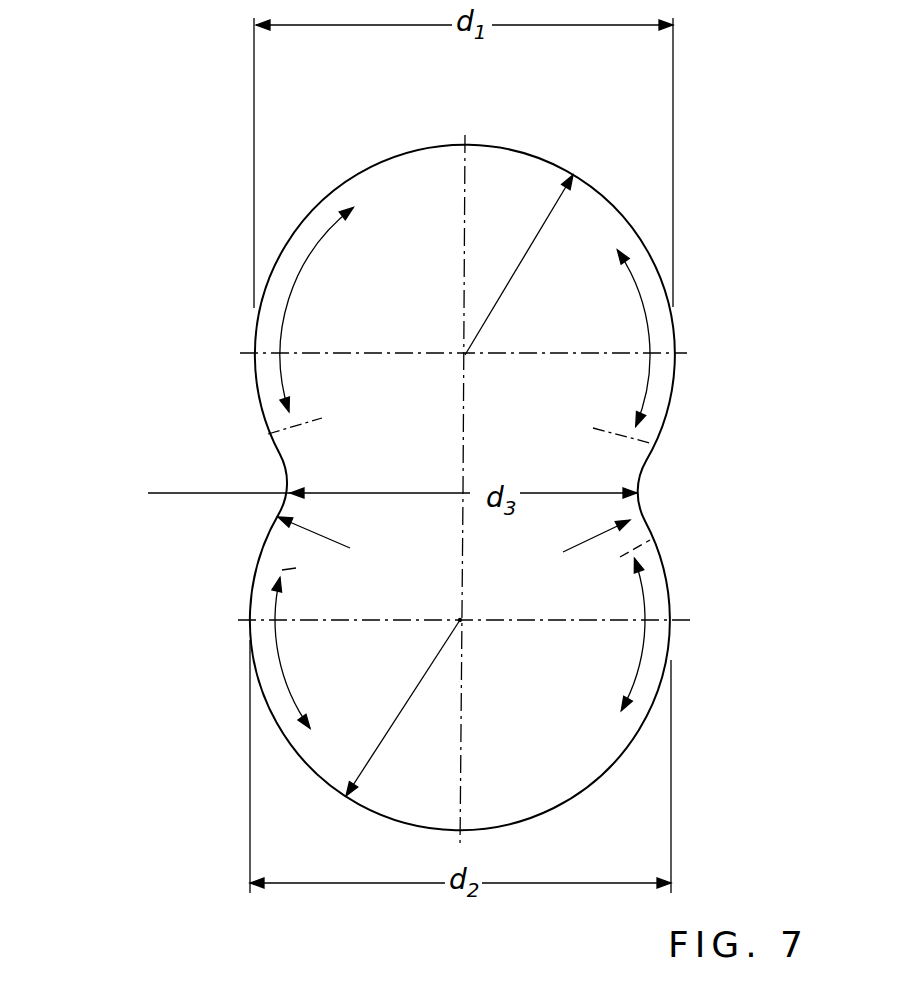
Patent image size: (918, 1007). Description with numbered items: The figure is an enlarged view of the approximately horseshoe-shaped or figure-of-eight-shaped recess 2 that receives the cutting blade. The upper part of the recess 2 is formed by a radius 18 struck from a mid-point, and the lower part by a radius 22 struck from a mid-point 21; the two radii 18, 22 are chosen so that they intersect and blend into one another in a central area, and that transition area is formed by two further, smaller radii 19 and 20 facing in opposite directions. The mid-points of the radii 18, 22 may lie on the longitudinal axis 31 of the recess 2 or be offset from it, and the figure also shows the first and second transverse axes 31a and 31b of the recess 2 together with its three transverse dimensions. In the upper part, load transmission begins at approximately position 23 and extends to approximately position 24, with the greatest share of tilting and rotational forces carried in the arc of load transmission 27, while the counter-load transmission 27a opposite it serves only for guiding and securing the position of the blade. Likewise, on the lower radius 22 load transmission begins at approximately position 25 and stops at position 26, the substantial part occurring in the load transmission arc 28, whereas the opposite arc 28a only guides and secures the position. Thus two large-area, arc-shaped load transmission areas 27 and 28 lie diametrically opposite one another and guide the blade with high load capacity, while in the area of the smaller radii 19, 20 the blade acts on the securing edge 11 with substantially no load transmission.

The recess 2 is at (273, 202).
The securing edge 11 is at (758, 423).
The radius 18 is at (530, 247).
The smaller radius 19 is at (633, 518).
The smaller radius 20 is at (325, 540).
The mid-point 21 is at (461, 622).
The radius 22 is at (380, 748).
The position 23 is at (302, 425).
The position 24 is at (627, 440).
The position 25 is at (282, 570).
The position 26 is at (620, 557).
The load transmission arc 27 is at (290, 293).
The counter-load transmission 27a is at (645, 327).
The load transmission arc 28 is at (645, 655).
The opposite arc 28a is at (278, 654).
The longitudinal axis 31 is at (467, 208).
The first transverse axis 31a is at (349, 355).
The second transverse axis 31b is at (412, 620).